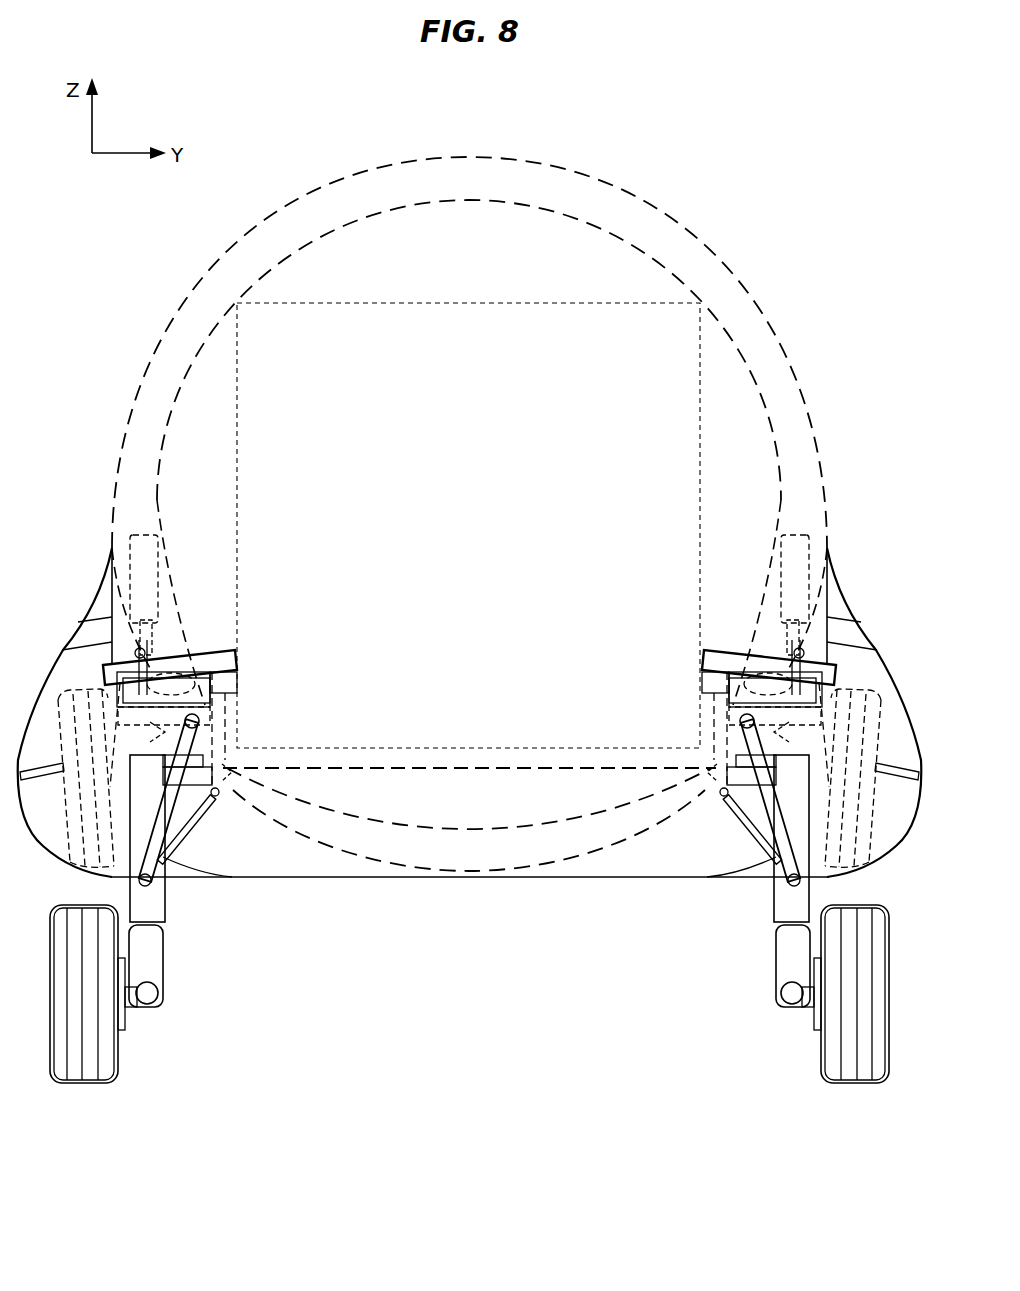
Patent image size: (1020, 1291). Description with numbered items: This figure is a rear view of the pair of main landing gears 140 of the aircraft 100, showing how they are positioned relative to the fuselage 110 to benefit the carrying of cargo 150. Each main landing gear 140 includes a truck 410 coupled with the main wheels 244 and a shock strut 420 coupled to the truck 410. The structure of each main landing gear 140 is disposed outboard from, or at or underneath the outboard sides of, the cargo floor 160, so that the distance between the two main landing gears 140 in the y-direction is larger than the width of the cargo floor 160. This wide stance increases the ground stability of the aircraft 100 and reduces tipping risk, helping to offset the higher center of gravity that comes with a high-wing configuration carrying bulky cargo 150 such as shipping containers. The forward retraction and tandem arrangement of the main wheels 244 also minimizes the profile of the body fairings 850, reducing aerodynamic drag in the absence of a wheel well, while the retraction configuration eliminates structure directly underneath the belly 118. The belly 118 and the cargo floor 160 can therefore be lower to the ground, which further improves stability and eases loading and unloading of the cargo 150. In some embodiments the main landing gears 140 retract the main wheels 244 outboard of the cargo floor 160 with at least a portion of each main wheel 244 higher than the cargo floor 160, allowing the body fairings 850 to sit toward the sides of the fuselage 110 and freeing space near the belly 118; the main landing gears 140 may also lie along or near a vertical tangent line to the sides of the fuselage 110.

The aircraft 100 is at (778, 146).
The fuselage 110 is at (763, 308).
The belly 118 is at (512, 878).
The main landing gear 140 is at (221, 1047).
The cargo 150 is at (513, 303).
The cargo floor 160 is at (383, 748).
The main wheels 244 is at (63, 823).
The truck 410 is at (127, 995).
The shock strut 420 is at (153, 955).
The body fairings 850 is at (42, 658).